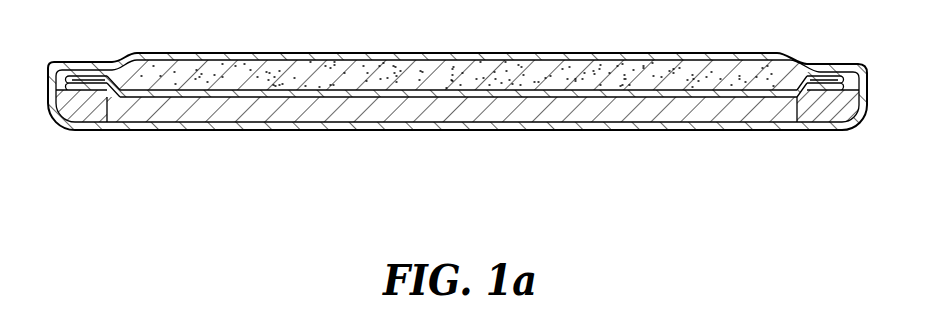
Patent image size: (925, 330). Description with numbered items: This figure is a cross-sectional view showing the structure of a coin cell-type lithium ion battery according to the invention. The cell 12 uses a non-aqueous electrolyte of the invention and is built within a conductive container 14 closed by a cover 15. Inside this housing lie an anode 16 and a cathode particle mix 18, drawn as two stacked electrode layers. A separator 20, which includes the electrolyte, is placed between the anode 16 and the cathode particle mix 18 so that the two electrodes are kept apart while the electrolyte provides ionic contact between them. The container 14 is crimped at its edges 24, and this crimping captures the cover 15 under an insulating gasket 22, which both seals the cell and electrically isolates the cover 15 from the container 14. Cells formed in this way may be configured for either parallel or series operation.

The cell 12 is at (181, 155).
The conductive container 14 is at (778, 126).
The cover 15 is at (612, 53).
The anode 16 is at (530, 107).
The cathode particle mix 18 is at (478, 75).
The separator 20 is at (680, 93).
The insulating gasket 22 is at (826, 103).
The crimped edges 24 is at (48, 70).